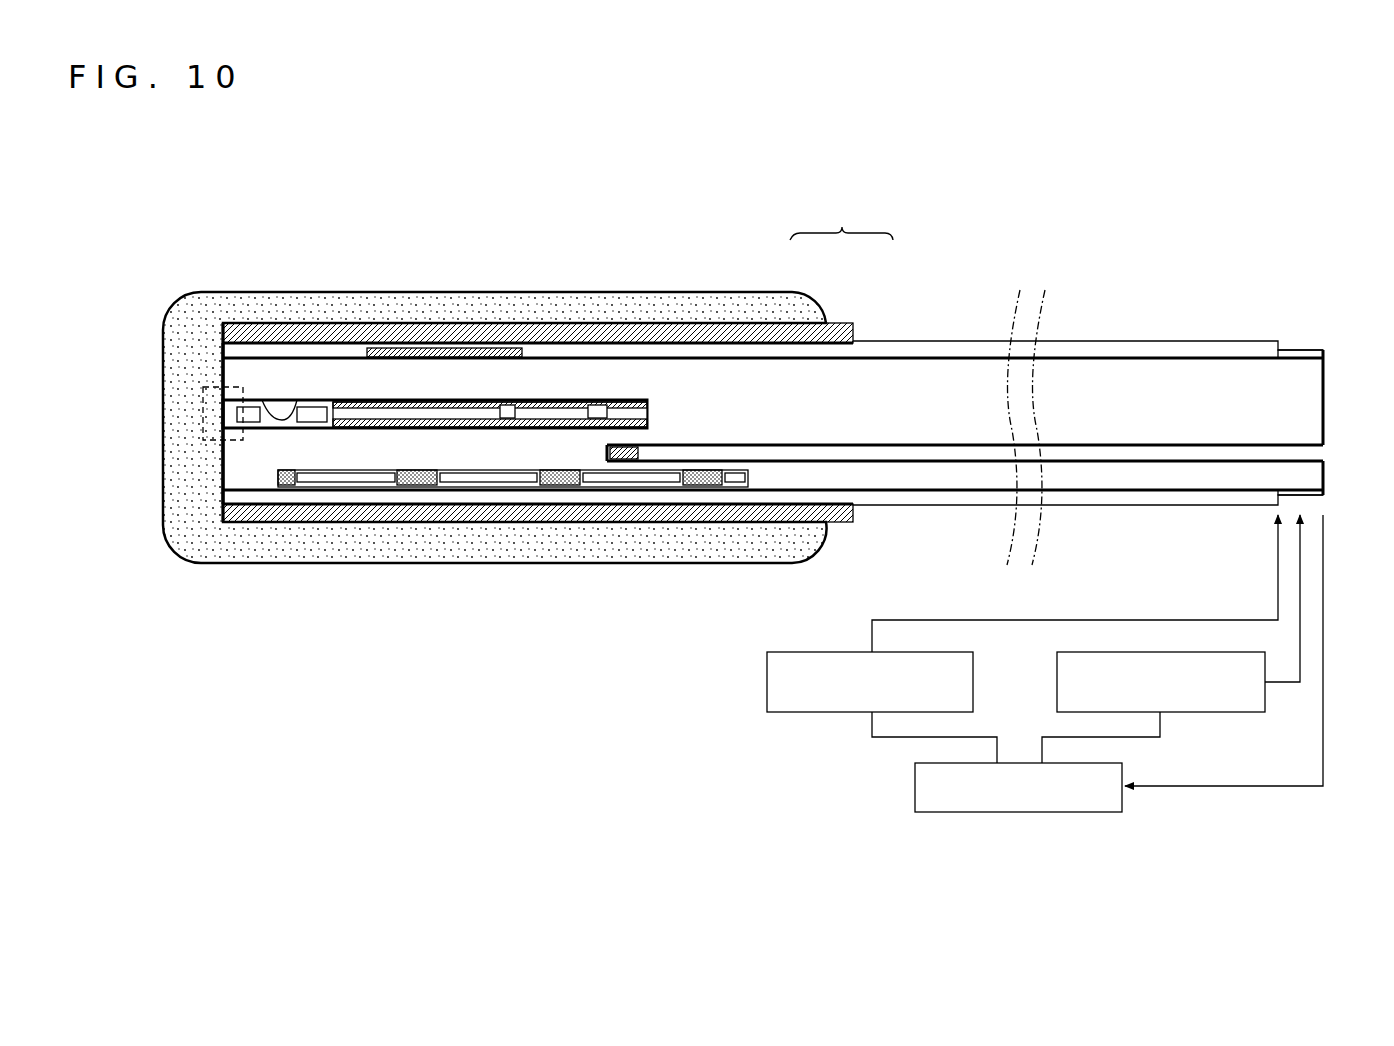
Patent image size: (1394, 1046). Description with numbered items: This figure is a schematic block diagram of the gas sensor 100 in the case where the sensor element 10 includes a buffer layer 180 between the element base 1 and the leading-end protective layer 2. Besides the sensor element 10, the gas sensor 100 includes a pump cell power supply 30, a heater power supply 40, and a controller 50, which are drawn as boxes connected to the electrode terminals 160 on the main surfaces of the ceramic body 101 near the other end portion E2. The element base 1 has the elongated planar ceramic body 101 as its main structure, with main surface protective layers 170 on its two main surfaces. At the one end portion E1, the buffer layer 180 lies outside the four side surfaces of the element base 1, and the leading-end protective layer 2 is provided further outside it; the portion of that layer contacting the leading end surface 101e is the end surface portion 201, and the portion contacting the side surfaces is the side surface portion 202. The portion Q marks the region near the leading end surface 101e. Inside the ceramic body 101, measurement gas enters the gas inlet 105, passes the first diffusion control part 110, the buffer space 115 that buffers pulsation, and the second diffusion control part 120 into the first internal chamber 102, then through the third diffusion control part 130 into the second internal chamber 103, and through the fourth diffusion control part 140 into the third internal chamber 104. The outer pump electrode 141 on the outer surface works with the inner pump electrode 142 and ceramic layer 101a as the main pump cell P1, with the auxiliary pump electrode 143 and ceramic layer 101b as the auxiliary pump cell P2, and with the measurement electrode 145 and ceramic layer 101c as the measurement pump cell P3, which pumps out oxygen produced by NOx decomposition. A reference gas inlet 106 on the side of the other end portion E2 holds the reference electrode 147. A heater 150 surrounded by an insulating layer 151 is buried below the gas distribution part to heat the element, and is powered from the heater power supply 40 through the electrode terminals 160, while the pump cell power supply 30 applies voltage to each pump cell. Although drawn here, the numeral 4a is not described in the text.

The element base 1 is at (884, 322).
The leading-end protective layer 2 is at (792, 310).
The sensor element 10 is at (841, 219).
The pump cell power supply 30 is at (1212, 712).
The heater power supply 40 is at (812, 712).
The controller 50 is at (1019, 812).
The gas sensor 100 is at (668, 715).
The ceramic body 101 is at (1170, 387).
The ceramic layer 101a is at (317, 377).
The ceramic layer 101b is at (528, 377).
The ceramic layer 101c is at (655, 400).
The leading end surface 101e is at (210, 590).
The first internal chamber 102 is at (417, 410).
The second internal chamber 103 is at (537, 410).
The third internal chamber 104 is at (640, 410).
The gas inlet 105 is at (225, 413).
The reference gas inlet 106 is at (1310, 453).
The first diffusion control part 110 is at (262, 398).
The buffer space 115 is at (280, 424).
The second diffusion control part 120 is at (295, 398).
The third diffusion control part 130 is at (483, 405).
The fourth diffusion control part 140 is at (597, 406).
The outer pump electrode 141 is at (397, 347).
The inner pump electrode 142 is at (365, 398).
The auxiliary pump electrode 143 is at (568, 404).
The measurement electrode 145 is at (625, 404).
The reference electrode 147 is at (620, 459).
The heater 150 is at (513, 468).
The insulating layer 151 is at (433, 468).
The electrode terminals 160 is at (1300, 352).
The main surface protective layers 170 is at (955, 350).
The buffer layer 180 is at (733, 352).
The end surface portion 201 is at (185, 360).
The side surface portion 202 is at (283, 300).
The pump cell 4a is at (460, 308).
The one end portion E1 is at (158, 450).
The other end portion E2 is at (1343, 407).
The main pump cell P1 is at (413, 212).
The auxiliary pump cell P2 is at (583, 212).
The measurement pump cell P3 is at (690, 212).
The portion Q is at (203, 387).